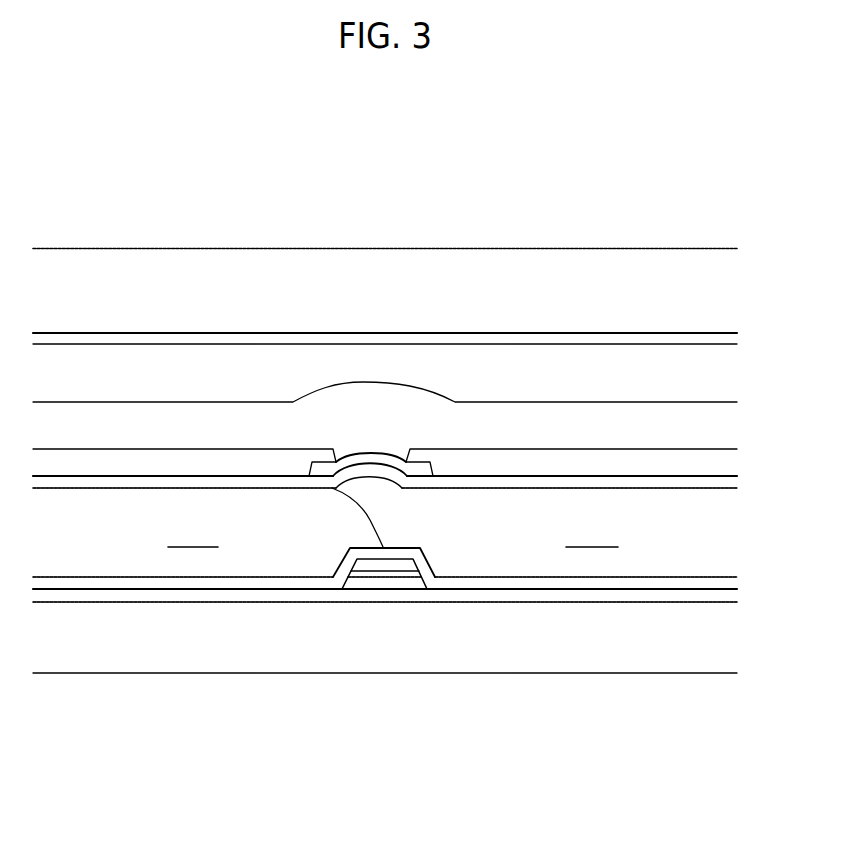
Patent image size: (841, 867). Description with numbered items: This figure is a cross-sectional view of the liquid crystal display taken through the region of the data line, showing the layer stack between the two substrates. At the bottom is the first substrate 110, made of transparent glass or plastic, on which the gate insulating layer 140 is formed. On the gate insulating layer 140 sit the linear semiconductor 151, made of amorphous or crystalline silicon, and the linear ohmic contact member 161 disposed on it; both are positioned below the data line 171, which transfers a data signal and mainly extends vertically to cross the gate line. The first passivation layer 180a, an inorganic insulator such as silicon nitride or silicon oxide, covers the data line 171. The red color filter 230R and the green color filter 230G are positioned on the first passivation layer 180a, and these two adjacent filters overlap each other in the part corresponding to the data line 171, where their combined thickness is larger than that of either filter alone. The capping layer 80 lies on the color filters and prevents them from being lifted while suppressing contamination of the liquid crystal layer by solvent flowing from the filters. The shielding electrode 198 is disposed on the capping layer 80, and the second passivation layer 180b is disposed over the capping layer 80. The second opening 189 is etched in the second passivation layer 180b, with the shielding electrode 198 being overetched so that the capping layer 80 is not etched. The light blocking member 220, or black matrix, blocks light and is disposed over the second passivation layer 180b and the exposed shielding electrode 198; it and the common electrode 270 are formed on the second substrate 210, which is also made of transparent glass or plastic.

The first substrate 110 is at (658, 650).
The gate insulating layer 140 is at (545, 593).
The linear semiconductor 151 is at (387, 582).
The linear ohmic contact member 161 is at (420, 578).
The data line 171 is at (367, 563).
The first passivation layer 180a is at (247, 583).
The second passivation layer 180b is at (625, 458).
The capping layer 80 is at (515, 483).
The second opening 189 is at (335, 457).
The shielding electrode 198 is at (388, 460).
The light blocking member 220 is at (705, 417).
The common electrode 270 is at (215, 338).
The second substrate 210 is at (125, 278).
The red color filter 230R is at (193, 534).
The green color filter 230G is at (592, 534).